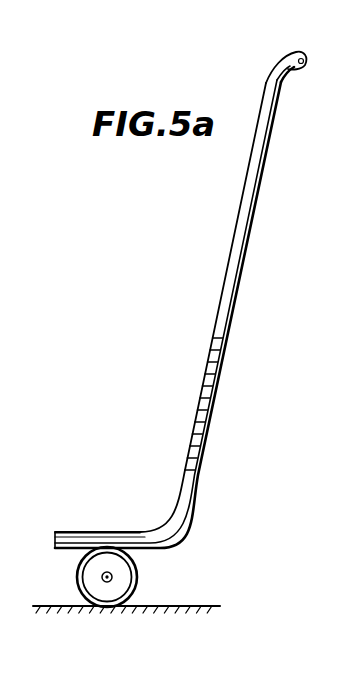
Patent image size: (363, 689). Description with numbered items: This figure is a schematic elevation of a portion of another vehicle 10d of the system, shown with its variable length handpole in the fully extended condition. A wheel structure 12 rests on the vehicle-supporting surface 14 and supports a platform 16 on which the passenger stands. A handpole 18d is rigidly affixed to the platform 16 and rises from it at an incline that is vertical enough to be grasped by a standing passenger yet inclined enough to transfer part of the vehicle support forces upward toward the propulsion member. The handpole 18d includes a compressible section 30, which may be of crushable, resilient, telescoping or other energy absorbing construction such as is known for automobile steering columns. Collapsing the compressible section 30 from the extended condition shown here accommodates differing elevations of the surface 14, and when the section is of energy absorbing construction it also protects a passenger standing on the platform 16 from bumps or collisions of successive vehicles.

The vehicle 10d is at (193, 300).
The handpole 18d is at (232, 327).
The compressible section 30 is at (221, 397).
The platform 16 is at (86, 531).
The wheel structure 12 is at (157, 573).
The surface 14 is at (203, 603).